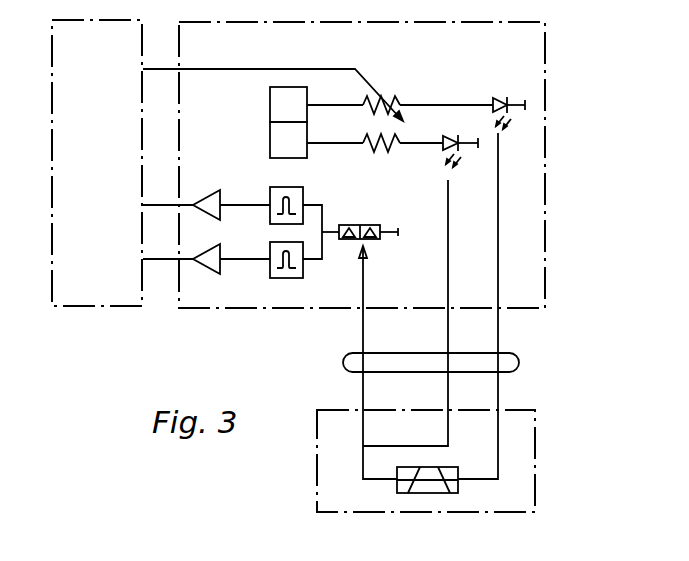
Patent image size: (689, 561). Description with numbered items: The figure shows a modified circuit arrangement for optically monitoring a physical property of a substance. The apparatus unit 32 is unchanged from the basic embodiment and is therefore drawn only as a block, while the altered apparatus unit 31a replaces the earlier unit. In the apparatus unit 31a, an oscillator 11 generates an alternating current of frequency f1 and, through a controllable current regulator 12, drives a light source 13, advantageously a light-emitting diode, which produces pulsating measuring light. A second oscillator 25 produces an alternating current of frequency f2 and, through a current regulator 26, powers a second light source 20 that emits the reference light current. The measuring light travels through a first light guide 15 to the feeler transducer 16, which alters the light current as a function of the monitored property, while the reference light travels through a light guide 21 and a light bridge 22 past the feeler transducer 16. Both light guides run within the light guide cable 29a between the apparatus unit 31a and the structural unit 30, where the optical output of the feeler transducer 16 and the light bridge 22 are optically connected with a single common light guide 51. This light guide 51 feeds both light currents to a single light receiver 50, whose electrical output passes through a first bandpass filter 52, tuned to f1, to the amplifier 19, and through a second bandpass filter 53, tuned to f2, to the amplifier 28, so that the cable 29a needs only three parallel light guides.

The oscillator 11 is at (270, 104).
The second oscillator 25 is at (270, 139).
The controllable current regulator 12 is at (388, 100).
The light source 13 is at (500, 97).
The current regulator 26 is at (378, 152).
The second light source 20 is at (445, 153).
The apparatus unit 31a is at (548, 176).
The amplifier 28 is at (207, 198).
The second bandpass filter 53 is at (270, 192).
The amplifier 19 is at (209, 272).
The first bandpass filter 52 is at (284, 278).
The light receiver 50 is at (361, 226).
The apparatus unit 32 is at (78, 307).
The light guide 51 is at (365, 334).
The light guide 21 is at (449, 337).
The first light guide 15 is at (499, 334).
The light guide cable 29a is at (520, 362).
The light bridge 22 is at (406, 445).
The structural unit 30 is at (537, 465).
The feeler transducer 16 is at (459, 489).